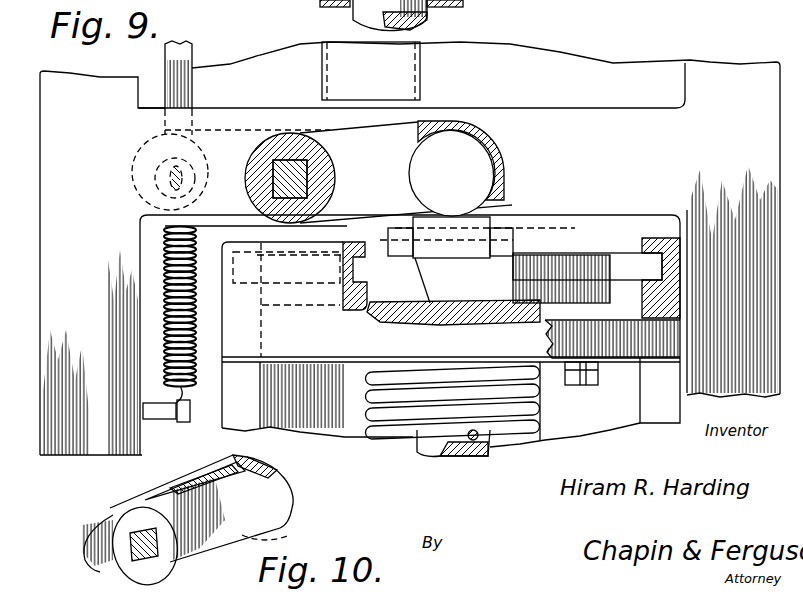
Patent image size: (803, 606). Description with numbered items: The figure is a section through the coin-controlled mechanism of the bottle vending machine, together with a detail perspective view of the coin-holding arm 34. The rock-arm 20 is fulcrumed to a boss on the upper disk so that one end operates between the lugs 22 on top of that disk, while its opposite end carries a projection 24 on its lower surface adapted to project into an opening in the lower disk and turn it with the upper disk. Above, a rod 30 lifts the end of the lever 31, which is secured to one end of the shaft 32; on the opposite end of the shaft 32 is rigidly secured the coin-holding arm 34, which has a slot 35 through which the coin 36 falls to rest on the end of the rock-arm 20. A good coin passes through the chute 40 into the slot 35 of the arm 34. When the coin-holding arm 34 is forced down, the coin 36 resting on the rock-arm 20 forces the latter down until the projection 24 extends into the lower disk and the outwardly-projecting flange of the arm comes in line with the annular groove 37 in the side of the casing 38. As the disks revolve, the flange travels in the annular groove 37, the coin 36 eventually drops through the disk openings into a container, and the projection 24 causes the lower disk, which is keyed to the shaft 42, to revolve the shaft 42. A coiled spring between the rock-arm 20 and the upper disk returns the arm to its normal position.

In FIG. 9, the rock-arm 20 is at (495, 215).
In FIG. 9, the lugs 22 is at (389, 233).
In FIG. 9, the projection 24 is at (470, 242).
In FIG. 9, the rod 30 is at (187, 60).
In FIG. 9, the lever 31 is at (133, 169).
In FIG. 9, the shaft 32 is at (278, 162).
In FIG. 9, the coin-holding arm 34 is at (476, 124).
In FIG. 10, the coin-holding arm 34 is at (108, 498).
In FIG. 9, the slot 35 is at (371, 132).
In FIG. 10, the slot 35 is at (200, 472).
In FIG. 9, the coin 36 is at (479, 157).
In FIG. 10, the coin 36 is at (273, 533).
In FIG. 9, the annular groove 37 is at (645, 258).
In FIG. 9, the casing 38 is at (682, 279).
In FIG. 9, the chute 40 is at (420, 64).
In FIG. 9, the shaft 42 is at (472, 455).